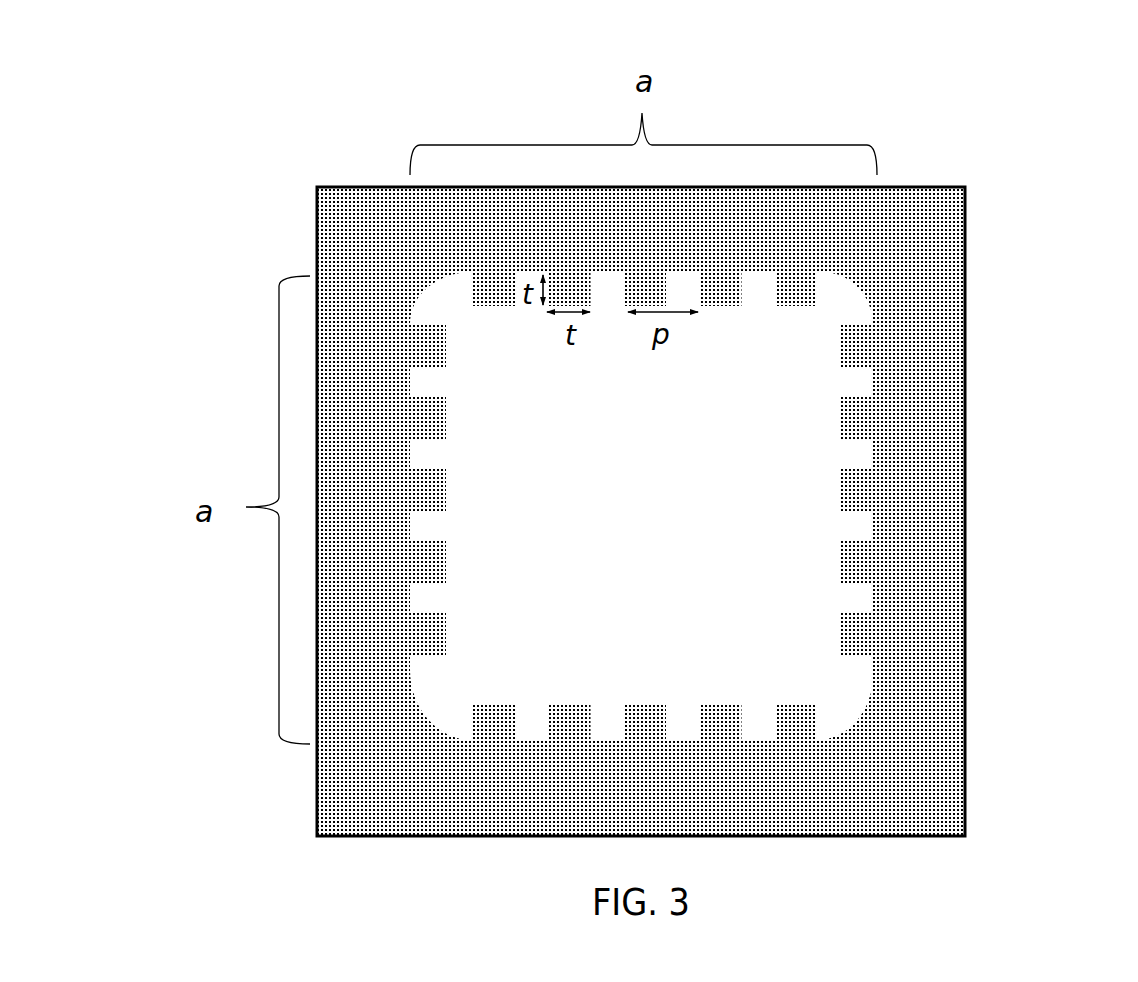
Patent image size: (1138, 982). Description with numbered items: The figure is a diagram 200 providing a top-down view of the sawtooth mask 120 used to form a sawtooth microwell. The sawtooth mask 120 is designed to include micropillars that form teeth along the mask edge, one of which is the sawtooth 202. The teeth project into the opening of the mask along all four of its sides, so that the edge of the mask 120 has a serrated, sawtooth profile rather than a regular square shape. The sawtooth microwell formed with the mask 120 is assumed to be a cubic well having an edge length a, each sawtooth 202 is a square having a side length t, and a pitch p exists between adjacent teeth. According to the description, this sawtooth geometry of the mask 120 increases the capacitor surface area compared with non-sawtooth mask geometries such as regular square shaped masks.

The diagram 200 is at (698, 421).
The sawtooth mask 120 is at (965, 392).
The sawtooth 202 is at (867, 627).